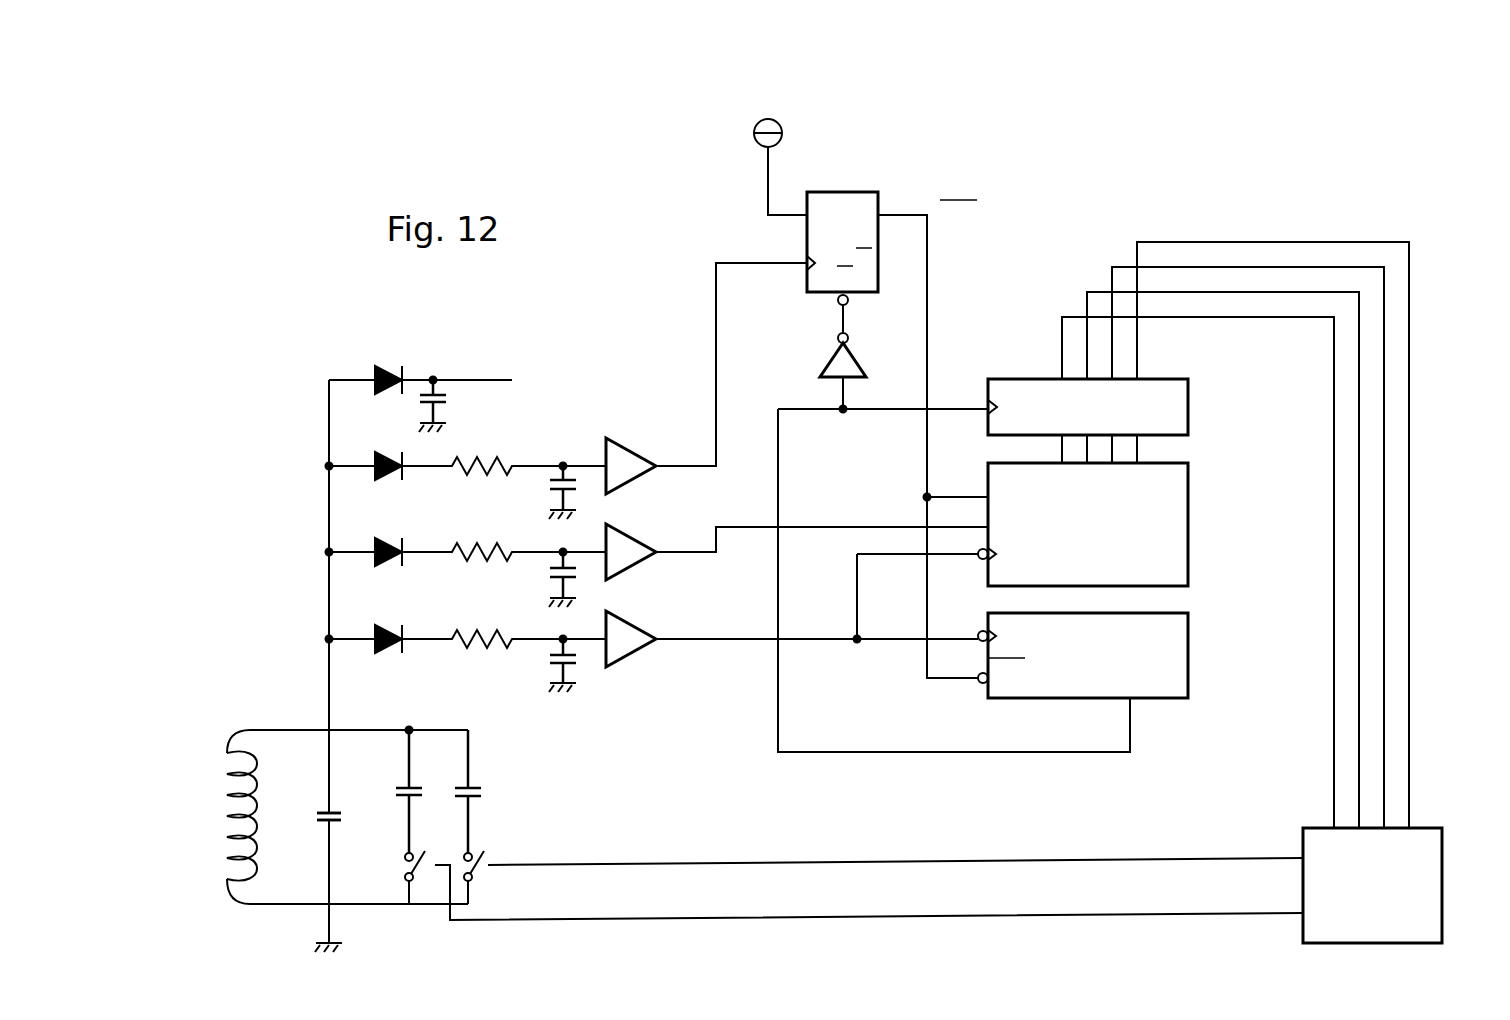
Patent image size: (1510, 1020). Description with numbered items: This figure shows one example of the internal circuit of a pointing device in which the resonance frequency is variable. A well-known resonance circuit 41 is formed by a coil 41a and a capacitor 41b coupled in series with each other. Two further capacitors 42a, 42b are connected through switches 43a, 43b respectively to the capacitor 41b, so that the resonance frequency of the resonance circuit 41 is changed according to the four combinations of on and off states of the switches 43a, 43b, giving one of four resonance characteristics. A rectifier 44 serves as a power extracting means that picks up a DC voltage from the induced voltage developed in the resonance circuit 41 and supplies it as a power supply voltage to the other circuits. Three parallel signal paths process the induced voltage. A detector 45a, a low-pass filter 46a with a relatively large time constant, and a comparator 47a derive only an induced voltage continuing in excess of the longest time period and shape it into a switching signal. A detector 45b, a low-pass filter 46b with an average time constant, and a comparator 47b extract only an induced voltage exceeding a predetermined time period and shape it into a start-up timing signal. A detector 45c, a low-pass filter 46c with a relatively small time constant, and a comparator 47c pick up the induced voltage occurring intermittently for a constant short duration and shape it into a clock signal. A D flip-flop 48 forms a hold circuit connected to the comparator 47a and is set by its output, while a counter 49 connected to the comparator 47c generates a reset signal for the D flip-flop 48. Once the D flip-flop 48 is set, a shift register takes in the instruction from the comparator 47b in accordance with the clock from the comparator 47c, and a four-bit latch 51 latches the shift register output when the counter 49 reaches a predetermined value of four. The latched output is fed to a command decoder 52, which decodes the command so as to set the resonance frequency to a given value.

The resonance circuit 41 is at (316, 822).
The coil 41a is at (224, 748).
The capacitor 41b is at (328, 822).
The capacitor 42a is at (400, 785).
The capacitor 42b is at (477, 785).
The switch 43a is at (402, 870).
The switch 43b is at (485, 875).
The rectifier 44 is at (432, 368).
The detector 45a is at (372, 456).
The detector 45b is at (372, 543).
The detector 45c is at (372, 628).
The low-pass filter 46a is at (559, 456).
The low-pass filter 46b is at (563, 540).
The low-pass filter 46c is at (563, 628).
The comparator 47a is at (623, 443).
The comparator 47b is at (643, 535).
The comparator 47c is at (643, 622).
The D flip-flop 48 is at (826, 293).
The counter 49 is at (1189, 493).
The four-bit latch 51 is at (1027, 378).
The command decoder 52 is at (1443, 860).